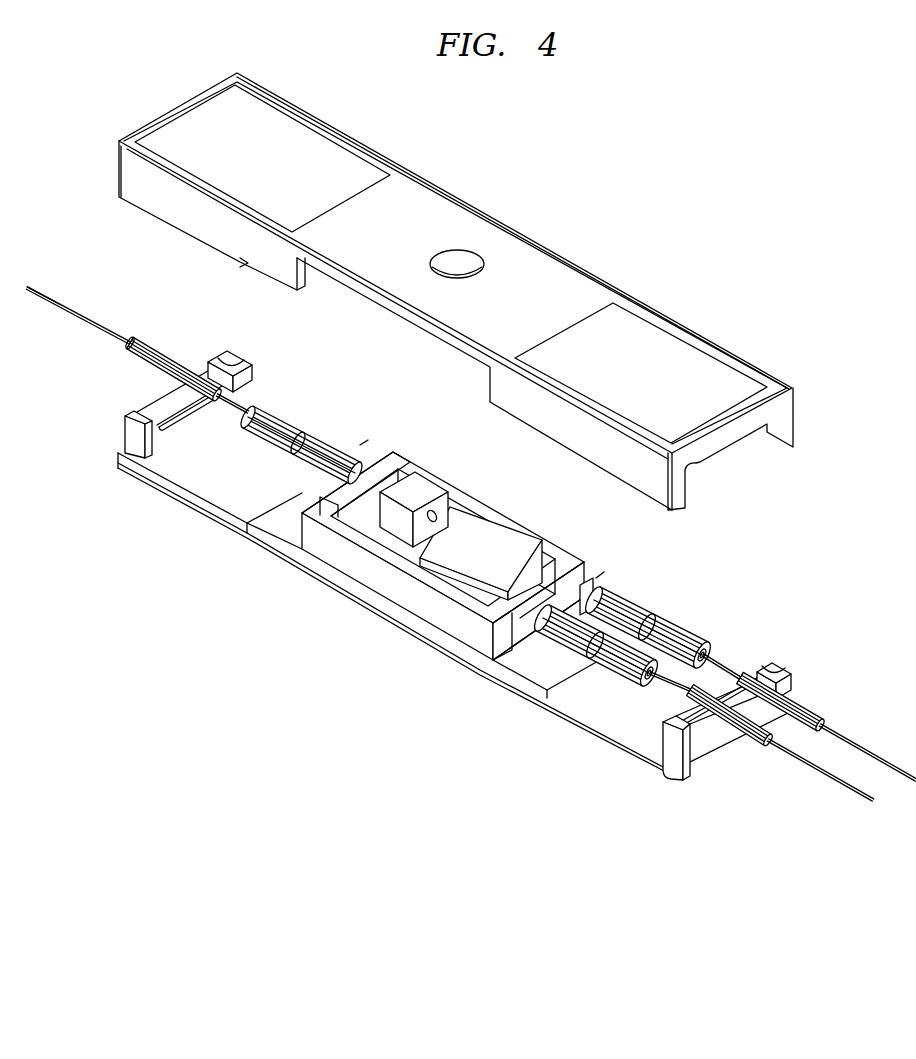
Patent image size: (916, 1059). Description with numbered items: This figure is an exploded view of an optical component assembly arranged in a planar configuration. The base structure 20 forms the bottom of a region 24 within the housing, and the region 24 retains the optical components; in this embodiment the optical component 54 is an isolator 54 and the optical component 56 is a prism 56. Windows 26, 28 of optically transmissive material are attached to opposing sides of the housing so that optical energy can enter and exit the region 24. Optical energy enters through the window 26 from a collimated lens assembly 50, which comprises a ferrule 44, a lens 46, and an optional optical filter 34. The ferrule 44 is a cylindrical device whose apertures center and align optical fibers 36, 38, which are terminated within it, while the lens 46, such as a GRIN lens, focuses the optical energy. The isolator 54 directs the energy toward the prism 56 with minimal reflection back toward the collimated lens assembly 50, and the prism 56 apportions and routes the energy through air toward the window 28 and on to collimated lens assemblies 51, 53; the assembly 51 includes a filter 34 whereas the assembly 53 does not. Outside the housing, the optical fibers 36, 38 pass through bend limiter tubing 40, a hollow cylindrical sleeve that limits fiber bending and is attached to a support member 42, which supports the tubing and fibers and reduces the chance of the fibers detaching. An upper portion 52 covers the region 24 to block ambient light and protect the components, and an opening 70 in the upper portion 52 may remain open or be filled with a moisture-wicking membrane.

The base structure 20 is at (208, 480).
The region 24 is at (387, 537).
The window 26 is at (320, 495).
The window 28 is at (530, 632).
The optical filter 34 is at (364, 448).
The optical fiber 36 is at (78, 313).
The optical fiber 38 is at (70, 320).
The bend limiter tubing 40 is at (167, 358).
The support member 42 is at (137, 438).
The ferrule 44 is at (277, 420).
The lens 46 is at (332, 442).
The collimated lens assembly 50 is at (285, 465).
The collimated lens assembly 51 is at (669, 602).
The upper portion 52 is at (567, 300).
The collimated lens assembly 53 is at (579, 667).
The isolator 54 is at (418, 490).
The prism 56 is at (502, 545).
The opening 70 is at (457, 262).